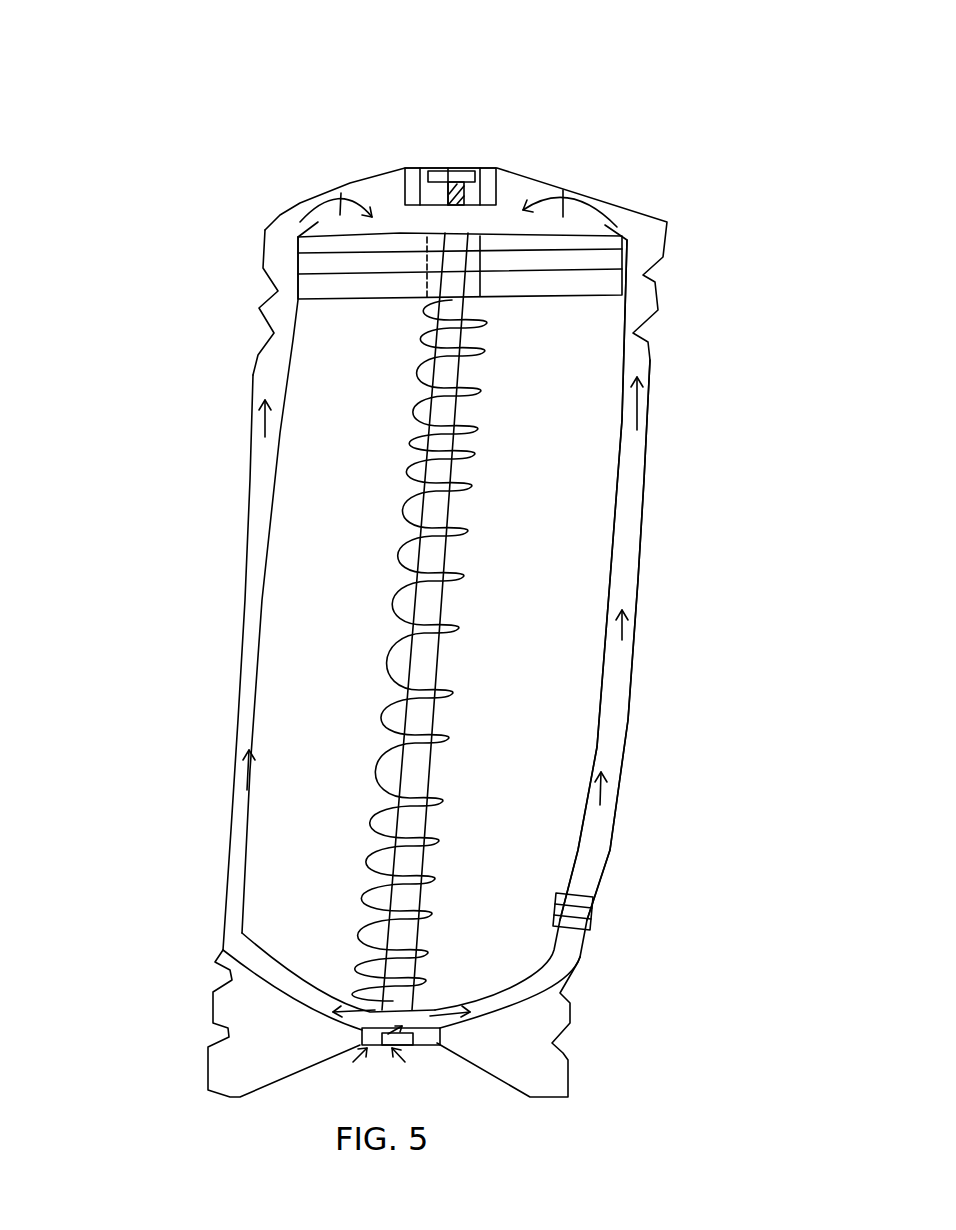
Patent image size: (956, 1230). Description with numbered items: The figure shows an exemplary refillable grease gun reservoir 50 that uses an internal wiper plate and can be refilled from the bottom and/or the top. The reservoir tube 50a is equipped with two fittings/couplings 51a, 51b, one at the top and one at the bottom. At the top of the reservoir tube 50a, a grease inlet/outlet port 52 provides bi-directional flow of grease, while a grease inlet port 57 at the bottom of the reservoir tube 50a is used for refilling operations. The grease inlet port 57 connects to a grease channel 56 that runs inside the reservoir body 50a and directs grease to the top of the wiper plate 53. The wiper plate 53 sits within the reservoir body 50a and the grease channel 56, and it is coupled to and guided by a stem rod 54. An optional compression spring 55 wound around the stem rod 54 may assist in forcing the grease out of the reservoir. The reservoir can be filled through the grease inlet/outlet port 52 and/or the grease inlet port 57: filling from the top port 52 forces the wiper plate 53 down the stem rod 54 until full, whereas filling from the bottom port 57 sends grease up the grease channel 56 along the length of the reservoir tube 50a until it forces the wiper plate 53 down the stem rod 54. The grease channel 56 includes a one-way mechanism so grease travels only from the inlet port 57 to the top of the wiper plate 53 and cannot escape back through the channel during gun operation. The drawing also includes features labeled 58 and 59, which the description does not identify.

The refillable grease gun reservoir 50 is at (367, 528).
The reservoir tube 50a is at (242, 620).
The fitting/coupling 51a is at (405, 168).
The fitting/coupling 51b is at (360, 1047).
The grease inlet/outlet port 52 is at (450, 167).
The wiper plate 53 is at (600, 258).
The stem rod 54 is at (442, 518).
The compression spring 55 is at (470, 690).
The grease channel 56 is at (587, 846).
The grease inlet port 57 is at (397, 1050).
The bellows section 58 is at (256, 319).
The clamp 59 is at (592, 913).